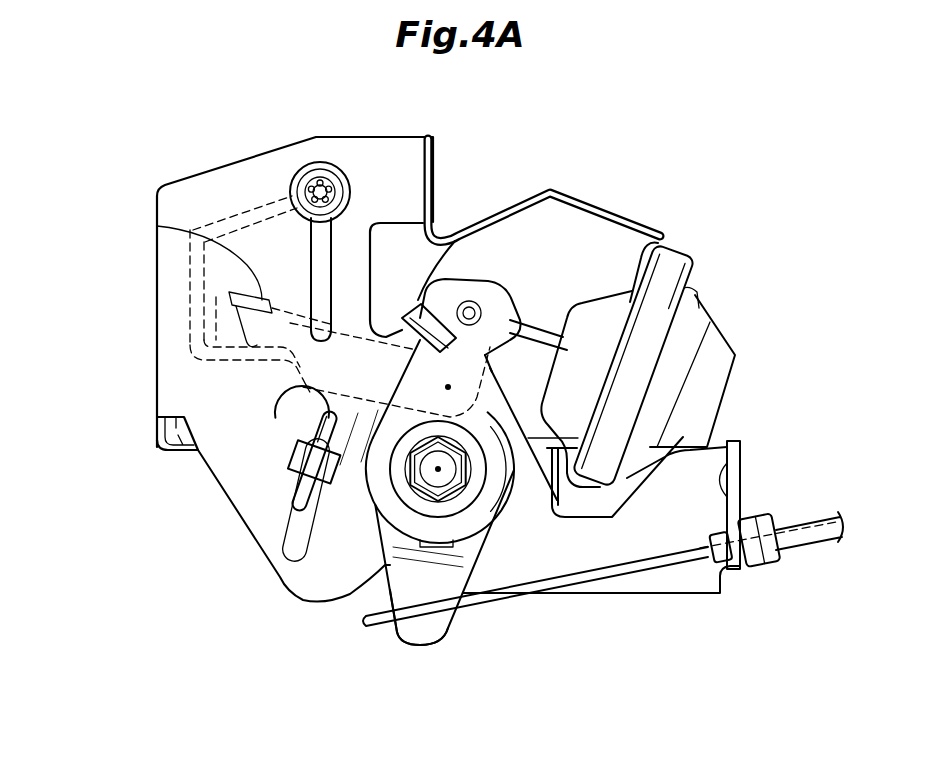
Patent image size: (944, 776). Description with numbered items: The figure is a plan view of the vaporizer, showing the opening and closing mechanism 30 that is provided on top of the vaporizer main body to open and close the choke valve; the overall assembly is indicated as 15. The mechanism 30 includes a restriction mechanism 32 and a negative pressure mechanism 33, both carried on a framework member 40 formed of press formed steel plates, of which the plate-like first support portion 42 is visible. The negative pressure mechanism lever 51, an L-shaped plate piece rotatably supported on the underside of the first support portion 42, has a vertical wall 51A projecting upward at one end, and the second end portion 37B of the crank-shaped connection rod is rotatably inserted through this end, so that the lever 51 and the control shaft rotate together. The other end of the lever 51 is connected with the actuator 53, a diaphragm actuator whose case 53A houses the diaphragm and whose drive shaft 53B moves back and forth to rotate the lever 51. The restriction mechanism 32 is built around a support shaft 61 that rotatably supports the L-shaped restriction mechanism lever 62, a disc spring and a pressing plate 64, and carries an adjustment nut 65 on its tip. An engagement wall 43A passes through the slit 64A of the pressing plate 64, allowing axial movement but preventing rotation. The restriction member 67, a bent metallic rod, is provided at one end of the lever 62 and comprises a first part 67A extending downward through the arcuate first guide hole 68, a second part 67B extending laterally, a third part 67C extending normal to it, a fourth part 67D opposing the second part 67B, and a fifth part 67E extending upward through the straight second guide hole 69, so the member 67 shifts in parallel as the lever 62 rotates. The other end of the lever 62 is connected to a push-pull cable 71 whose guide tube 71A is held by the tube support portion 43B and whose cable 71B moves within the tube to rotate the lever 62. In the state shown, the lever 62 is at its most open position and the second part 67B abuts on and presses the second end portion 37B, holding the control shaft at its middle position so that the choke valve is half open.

The latch device 15 is at (172, 74).
The opening and closing mechanism 30 is at (150, 176).
The restriction mechanism 32 is at (465, 633).
The negative pressure mechanism 33 is at (514, 288).
The second end portion 37B is at (247, 343).
The framework member 40 is at (296, 602).
The first support portion 42 is at (272, 553).
The engagement wall 43A is at (458, 240).
The tube support portion 43B is at (742, 452).
The negative pressure mechanism lever 51 is at (374, 312).
The vertical wall 51A is at (157, 225).
The actuator 53 is at (720, 312).
The case 53A is at (720, 353).
The drive shaft 53B is at (538, 335).
The support shaft 61 is at (455, 478).
The restriction mechanism lever 62 is at (438, 630).
The pressing plate 64 is at (380, 518).
The slit 64A is at (481, 312).
The adjustment nut 65 is at (393, 596).
The restriction member 67 is at (266, 196).
The first part 67A is at (276, 428).
The second part 67B is at (252, 358).
The third part 67C is at (189, 280).
The fourth part 67D is at (224, 212).
The fifth part 67E is at (323, 184).
The first guide hole 68 is at (284, 492).
The second guide hole 69 is at (330, 265).
The push-pull cable 71 is at (678, 580).
The guide tube 71A is at (810, 532).
The cable 71B is at (603, 590).